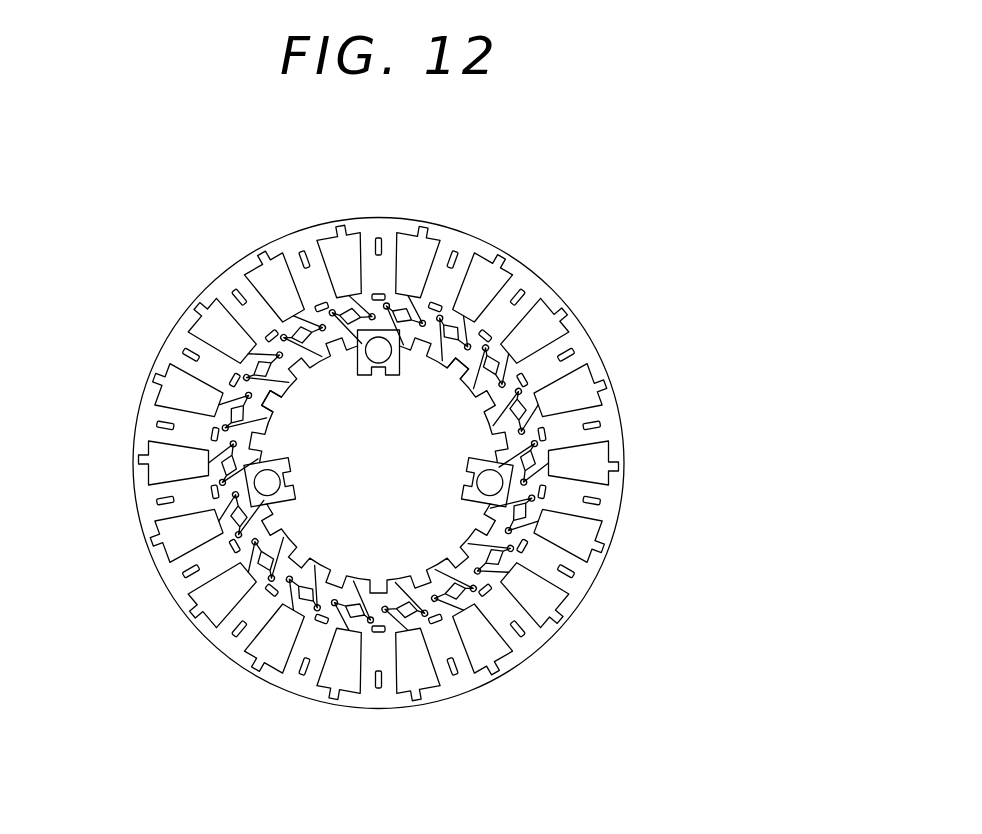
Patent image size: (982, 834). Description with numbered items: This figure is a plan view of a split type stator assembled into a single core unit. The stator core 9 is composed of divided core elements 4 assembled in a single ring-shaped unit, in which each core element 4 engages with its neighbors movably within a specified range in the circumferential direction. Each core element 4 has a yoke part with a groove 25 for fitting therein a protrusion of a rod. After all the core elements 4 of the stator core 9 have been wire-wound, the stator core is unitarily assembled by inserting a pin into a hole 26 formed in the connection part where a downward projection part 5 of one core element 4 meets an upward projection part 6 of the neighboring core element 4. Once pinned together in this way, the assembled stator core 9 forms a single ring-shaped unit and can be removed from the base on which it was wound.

The divided core element 4 is at (133, 442).
The downward projection part 5 is at (225, 425).
The upward projection part 6 is at (219, 418).
The stator core 9 is at (652, 476).
The groove 25 is at (461, 373).
The hole 26 is at (268, 412).